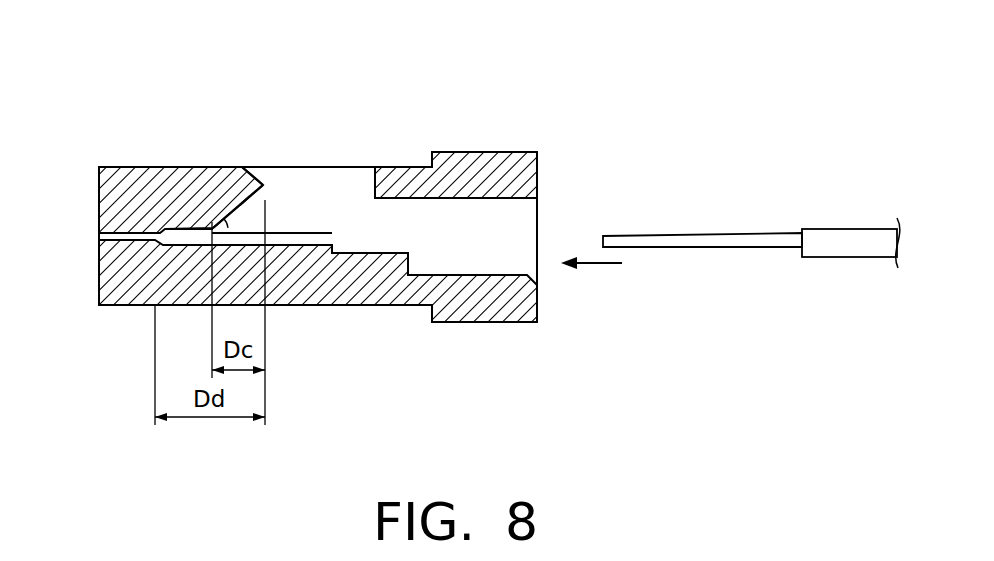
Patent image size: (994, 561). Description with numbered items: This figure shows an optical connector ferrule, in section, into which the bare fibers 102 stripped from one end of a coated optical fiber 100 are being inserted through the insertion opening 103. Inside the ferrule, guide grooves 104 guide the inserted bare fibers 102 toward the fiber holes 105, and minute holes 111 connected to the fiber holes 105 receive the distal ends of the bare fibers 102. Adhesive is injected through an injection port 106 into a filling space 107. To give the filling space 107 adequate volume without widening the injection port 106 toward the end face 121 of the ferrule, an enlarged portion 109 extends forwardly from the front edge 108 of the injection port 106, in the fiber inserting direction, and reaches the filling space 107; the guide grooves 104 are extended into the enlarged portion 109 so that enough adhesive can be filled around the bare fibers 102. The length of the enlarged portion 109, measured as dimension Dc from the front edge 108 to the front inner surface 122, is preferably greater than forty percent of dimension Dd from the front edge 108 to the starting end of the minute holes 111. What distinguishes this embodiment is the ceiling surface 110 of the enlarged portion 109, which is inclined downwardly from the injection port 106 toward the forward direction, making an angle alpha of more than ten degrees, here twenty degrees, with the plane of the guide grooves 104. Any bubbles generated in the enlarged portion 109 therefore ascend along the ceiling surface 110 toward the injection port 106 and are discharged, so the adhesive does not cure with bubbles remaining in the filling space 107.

The coated optical fiber 100 is at (835, 222).
The bare fibers 102 is at (757, 248).
The insertion opening 103 is at (550, 203).
The guide grooves 104 is at (285, 233).
The fiber holes 105 is at (185, 228).
The injection port 106 is at (364, 168).
The filling space 107 is at (343, 212).
The front edge 108 is at (255, 222).
The enlarged portion 109 is at (258, 196).
The ceiling surface 110 is at (245, 171).
The minute holes 111 is at (133, 235).
The end face 121 is at (99, 208).
The front inner surface 122 is at (215, 224).